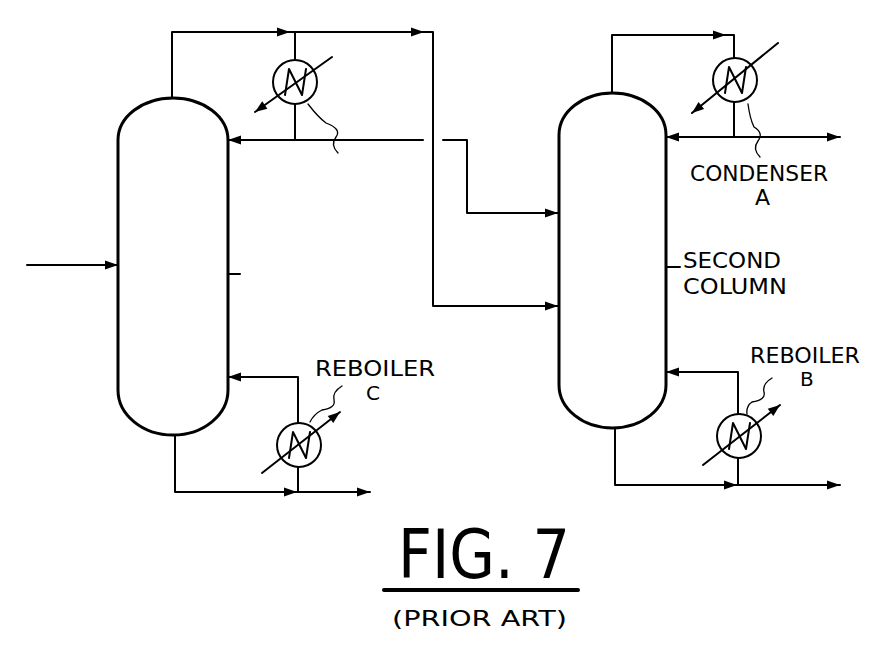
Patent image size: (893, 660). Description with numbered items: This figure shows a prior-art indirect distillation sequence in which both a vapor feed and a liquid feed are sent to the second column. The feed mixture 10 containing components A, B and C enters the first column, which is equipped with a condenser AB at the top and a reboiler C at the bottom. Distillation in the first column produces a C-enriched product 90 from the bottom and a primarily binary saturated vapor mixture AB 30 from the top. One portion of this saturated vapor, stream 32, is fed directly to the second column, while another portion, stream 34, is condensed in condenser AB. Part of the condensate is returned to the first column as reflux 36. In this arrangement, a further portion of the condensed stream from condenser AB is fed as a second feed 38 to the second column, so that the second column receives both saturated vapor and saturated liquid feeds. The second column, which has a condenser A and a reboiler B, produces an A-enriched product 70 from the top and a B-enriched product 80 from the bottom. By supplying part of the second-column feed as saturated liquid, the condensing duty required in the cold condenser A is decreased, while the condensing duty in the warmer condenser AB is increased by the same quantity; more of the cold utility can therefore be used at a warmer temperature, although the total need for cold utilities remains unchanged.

The feed mixture stream 10 is at (75, 268).
The binary vapor mixture AB stream 30 is at (172, 76).
The vapor portion fed to second column 32 is at (378, 33).
The vapor portion to condenser 34 is at (294, 47).
The reflux stream 36 is at (263, 143).
The second liquid feed to second column 38 is at (520, 210).
The A-enriched product stream 70 is at (786, 134).
The B-enriched product stream 80 is at (765, 487).
The C-enriched product stream 90 is at (320, 494).